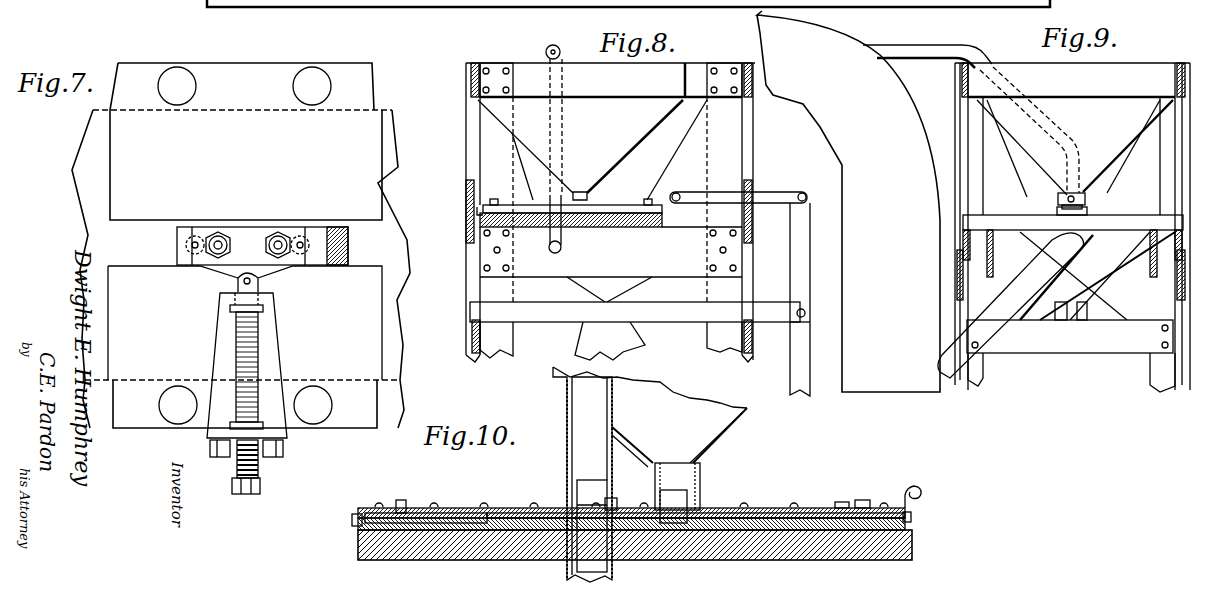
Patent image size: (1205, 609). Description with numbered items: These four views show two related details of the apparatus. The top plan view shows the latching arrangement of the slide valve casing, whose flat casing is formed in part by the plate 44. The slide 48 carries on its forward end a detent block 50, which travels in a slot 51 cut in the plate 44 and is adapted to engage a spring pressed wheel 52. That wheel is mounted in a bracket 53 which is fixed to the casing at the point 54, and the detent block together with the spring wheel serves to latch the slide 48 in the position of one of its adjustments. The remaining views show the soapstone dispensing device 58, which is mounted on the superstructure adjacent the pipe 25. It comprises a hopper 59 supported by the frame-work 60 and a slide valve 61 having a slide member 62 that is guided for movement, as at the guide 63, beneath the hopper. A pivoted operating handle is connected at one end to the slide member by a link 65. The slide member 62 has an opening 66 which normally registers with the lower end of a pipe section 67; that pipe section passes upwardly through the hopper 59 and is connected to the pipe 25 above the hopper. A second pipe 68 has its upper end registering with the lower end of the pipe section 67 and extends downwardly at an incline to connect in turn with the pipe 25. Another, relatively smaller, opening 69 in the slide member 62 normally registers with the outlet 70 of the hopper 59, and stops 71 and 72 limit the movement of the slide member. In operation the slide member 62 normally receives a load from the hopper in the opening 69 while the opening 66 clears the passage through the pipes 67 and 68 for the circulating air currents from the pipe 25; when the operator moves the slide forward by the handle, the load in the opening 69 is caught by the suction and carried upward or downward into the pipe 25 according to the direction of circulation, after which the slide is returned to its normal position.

In FIG. 9, the pipe 25 is at (910, 99).
In FIG. 7, the plate 44 is at (120, 148).
In FIG. 7, the slide 48 is at (95, 243).
In FIG. 7, the detent block 50 is at (240, 232).
In FIG. 7, the slot 51 is at (135, 220).
In FIG. 7, the spring pressed wheel 52 is at (238, 276).
In FIG. 7, the bracket 53 is at (213, 332).
In FIG. 7, the fastening of bracket to casing 54 is at (217, 458).
In FIG. 8, the soapstone dispensing device 58 is at (752, 142).
In FIG. 9, the soapstone dispensing device 58 is at (1057, 60).
In FIG. 8, the hopper 59 is at (592, 201).
In FIG. 9, the hopper 59 is at (1076, 210).
In FIG. 10, the hopper 59 is at (672, 388).
In FIG. 8, the frame-work 60 is at (635, 331).
In FIG. 9, the frame-work 60 is at (1071, 347).
In FIG. 8, the slide valve 61 is at (620, 207).
In FIG. 9, the slide valve 61 is at (1086, 199).
In FIG. 10, the slide valve 61 is at (513, 508).
In FIG. 10, the slide member 62 is at (788, 506).
In FIG. 10, the guide 63 is at (447, 508).
In FIG. 8, the link 65 is at (768, 198).
In FIG. 9, the link 65 is at (1011, 305).
In FIG. 10, the opening 66 is at (612, 500).
In FIG. 8, the pipe section 67 is at (553, 45).
In FIG. 9, the pipe section 67 is at (925, 52).
In FIG. 10, the pipe section 67 is at (567, 452).
In FIG. 8, the second pipe 68 is at (562, 240).
In FIG. 10, the second pipe 68 is at (590, 570).
In FIG. 10, the smaller opening 69 is at (673, 515).
In FIG. 10, the outlet 70 is at (668, 497).
In FIG. 10, the stop 71 is at (355, 524).
In FIG. 10, the stop 72 is at (908, 520).